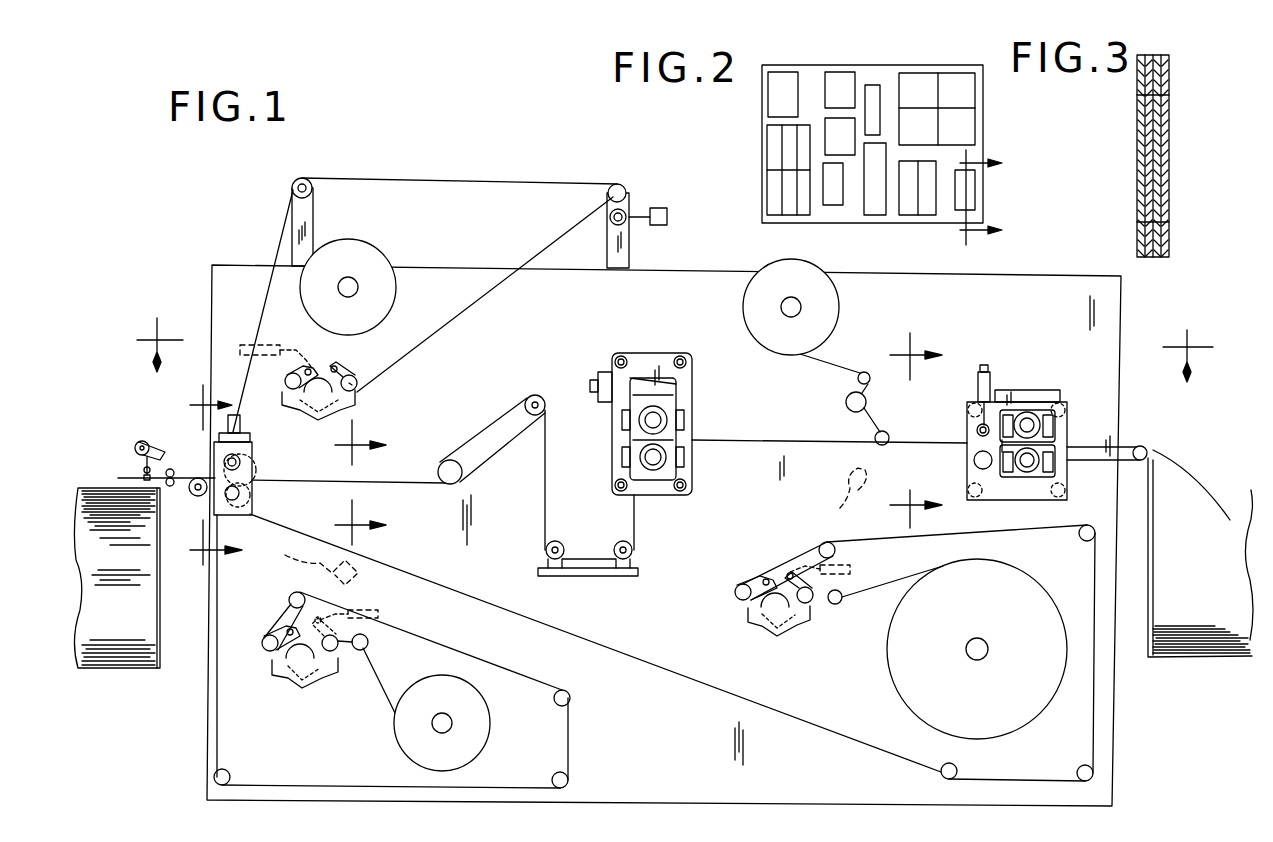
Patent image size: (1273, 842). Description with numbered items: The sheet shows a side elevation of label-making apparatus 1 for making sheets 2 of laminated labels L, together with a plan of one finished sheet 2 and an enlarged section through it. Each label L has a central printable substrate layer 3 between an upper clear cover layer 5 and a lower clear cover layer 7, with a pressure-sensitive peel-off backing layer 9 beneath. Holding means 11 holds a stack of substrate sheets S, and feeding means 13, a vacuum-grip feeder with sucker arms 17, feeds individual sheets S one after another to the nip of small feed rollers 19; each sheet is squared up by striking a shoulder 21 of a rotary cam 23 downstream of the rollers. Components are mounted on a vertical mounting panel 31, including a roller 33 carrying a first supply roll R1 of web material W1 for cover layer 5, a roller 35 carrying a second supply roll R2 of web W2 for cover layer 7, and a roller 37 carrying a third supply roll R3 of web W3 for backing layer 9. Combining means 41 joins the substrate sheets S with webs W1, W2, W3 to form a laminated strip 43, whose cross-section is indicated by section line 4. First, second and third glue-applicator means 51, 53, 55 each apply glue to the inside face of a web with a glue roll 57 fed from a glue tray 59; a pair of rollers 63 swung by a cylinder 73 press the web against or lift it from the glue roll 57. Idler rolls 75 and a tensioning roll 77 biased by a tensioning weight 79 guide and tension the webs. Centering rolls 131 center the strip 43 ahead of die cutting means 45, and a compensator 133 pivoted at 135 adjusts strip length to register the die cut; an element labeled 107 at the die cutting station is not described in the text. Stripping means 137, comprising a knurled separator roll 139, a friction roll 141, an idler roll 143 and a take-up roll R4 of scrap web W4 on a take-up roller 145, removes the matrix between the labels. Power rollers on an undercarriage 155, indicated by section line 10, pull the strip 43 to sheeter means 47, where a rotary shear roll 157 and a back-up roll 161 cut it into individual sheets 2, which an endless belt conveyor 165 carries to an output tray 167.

In FIG. 1, the label-making apparatus 1 is at (1050, 255).
In FIG. 1, the sheet of labels 2 is at (1195, 470).
In FIG. 2, the sheet of labels 2 is at (762, 100).
In FIG. 2, the central substrate layer 3 is at (972, 197).
In FIG. 3, the central substrate layer 3 is at (1155, 258).
In FIG. 1, the section line 4 is at (358, 483).
In FIG. 1, the first (upper) cover layer 5 is at (674, 349).
In FIG. 3, the first (upper) cover layer 5 is at (1170, 110).
In FIG. 1, the second (lower) cover layer 7 is at (213, 480).
In FIG. 3, the second (lower) cover layer 7 is at (1148, 258).
In FIG. 3, the pressure-sensitive peel-off backing layer 9 is at (1138, 165).
In FIG. 1, the section line 10 is at (910, 423).
In FIG. 1, the holding means 11 is at (95, 670).
In FIG. 1, the feeding means 13 is at (128, 435).
In FIG. 1, the sucker arms 17 is at (140, 475).
In FIG. 1, the feed rollers 19 is at (172, 468).
In FIG. 1, the shoulder 21 is at (196, 478).
In FIG. 1, the rotary cam 23 is at (205, 500).
In FIG. 1, the mounting panel 31 is at (760, 802).
In FIG. 1, the roller 33 is at (355, 285).
In FIG. 1, the roller 35 is at (434, 727).
In FIG. 1, the roller 37 is at (985, 652).
In FIG. 1, the combining means 41 is at (268, 455).
In FIG. 1, the laminated strip 43 is at (415, 478).
In FIG. 1, the die cutting means 45 is at (708, 375).
In FIG. 1, the sheeter means 47 is at (1048, 385).
In FIG. 1, the first glue-applicator means 51 is at (382, 388).
In FIG. 1, the second glue-applicator means 53 is at (278, 695).
In FIG. 1, the third glue-applicator means 55 is at (720, 605).
In FIG. 1, the glue roll 57 is at (350, 398).
In FIG. 1, the glue tray 59 is at (305, 690).
In FIG. 1, the rollers 63 is at (350, 375).
In FIG. 1, the cylinder 73 is at (258, 342).
In FIG. 1, the idler rolls 75 is at (310, 180).
In FIG. 1, the tensioning roll 77 is at (626, 190).
In FIG. 1, the tensioning weight 79 is at (667, 216).
In FIG. 1, the laminating rollers 107 is at (602, 368).
In FIG. 1, the centering rolls 131 is at (628, 542).
In FIG. 1, the compensator 133 is at (500, 455).
In FIG. 1, the pivot 135 is at (532, 398).
In FIG. 1, the stripping means 137 is at (865, 325).
In FIG. 1, the knurled separator roll 139 is at (889, 436).
In FIG. 1, the friction roll 141 is at (846, 402).
In FIG. 1, the idler roll 143 is at (870, 382).
In FIG. 1, the take-up roller 145 is at (800, 308).
In FIG. 1, the undercarriage 155 is at (992, 500).
In FIG. 1, the rotary shear roll 157 is at (1022, 412).
In FIG. 1, the back-up roll 161 is at (1060, 478).
In FIG. 1, the endless belt conveyor 165 is at (1128, 445).
In FIG. 1, the output tray 167 is at (1185, 660).
In FIG. 1, the first supply roll R1 is at (348, 240).
In FIG. 1, the second supply roll R2 is at (492, 730).
In FIG. 1, the third supply roll R3 is at (887, 665).
In FIG. 1, the take-up roll R4 is at (745, 318).
In FIG. 1, the web material W1 is at (500, 182).
In FIG. 1, the web material W2 is at (350, 790).
In FIG. 1, the web material W3 is at (654, 680).
In FIG. 1, the scrap web W4 is at (828, 368).
In FIG. 1, the substrate sheets S is at (125, 480).
In FIG. 2, the laminated labels L is at (778, 84).